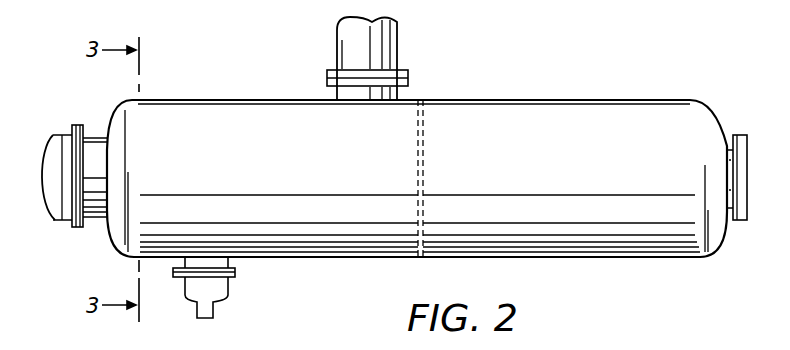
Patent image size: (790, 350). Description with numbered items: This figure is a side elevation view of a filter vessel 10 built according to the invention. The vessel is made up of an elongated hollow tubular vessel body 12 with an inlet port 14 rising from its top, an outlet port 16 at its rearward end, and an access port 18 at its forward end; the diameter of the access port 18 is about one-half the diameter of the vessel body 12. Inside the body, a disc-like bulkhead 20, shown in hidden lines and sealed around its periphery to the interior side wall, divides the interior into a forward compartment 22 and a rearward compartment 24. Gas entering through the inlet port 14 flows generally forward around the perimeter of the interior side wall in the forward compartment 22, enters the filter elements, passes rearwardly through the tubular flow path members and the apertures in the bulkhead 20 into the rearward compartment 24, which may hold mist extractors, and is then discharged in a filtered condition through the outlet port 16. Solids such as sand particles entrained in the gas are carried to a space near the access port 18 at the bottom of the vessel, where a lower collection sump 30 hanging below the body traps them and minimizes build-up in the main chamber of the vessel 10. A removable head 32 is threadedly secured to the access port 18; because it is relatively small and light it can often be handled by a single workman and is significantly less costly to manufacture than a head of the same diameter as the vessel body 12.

The filter vessel 10 is at (583, 87).
The vessel body 12 is at (205, 98).
The inlet port 14 is at (387, 40).
The outlet port 16 is at (741, 133).
The access port 18 is at (92, 150).
The bulkhead 20 is at (423, 127).
The forward compartment 22 is at (256, 120).
The rearward compartment 24 is at (647, 140).
The lower collection sump 30 is at (212, 290).
The removable head 32 is at (50, 167).